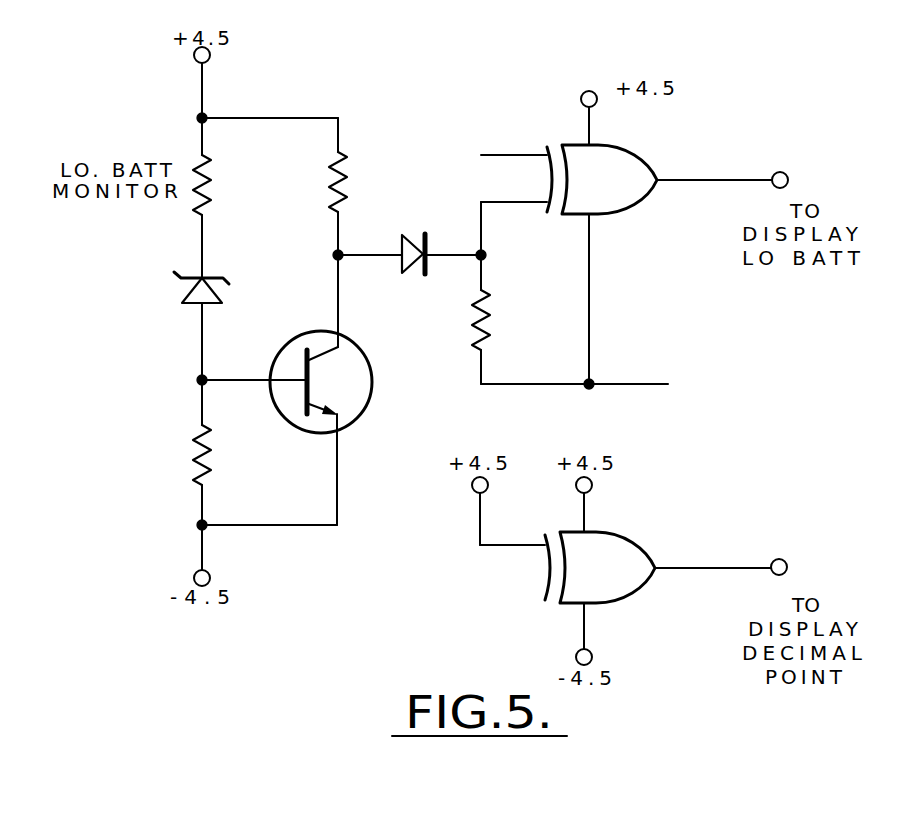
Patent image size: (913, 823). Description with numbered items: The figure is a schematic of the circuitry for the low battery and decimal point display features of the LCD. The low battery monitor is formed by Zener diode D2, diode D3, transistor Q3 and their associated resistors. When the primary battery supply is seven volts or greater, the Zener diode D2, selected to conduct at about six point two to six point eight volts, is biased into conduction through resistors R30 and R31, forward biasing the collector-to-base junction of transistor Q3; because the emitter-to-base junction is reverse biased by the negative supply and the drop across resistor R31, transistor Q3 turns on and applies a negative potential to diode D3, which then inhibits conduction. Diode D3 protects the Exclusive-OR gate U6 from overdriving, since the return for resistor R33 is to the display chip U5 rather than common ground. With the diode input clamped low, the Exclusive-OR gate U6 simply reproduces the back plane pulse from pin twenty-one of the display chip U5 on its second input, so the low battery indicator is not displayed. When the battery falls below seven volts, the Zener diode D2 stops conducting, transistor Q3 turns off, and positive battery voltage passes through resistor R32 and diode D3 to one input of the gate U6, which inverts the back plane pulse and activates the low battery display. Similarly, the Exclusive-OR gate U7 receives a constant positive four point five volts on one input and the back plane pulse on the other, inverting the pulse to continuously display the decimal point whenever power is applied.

The resistor R30 is at (232, 185).
The resistor R31 is at (166, 455).
The resistor R32 is at (367, 182).
The resistor R33 is at (508, 320).
The Zener diode D2 is at (223, 294).
The diode D3 is at (414, 275).
The transistor Q3 is at (373, 377).
The display chip U5 is at (481, 155).
The Exclusive-OR gate U6 is at (616, 190).
The Exclusive-OR gate U7 is at (610, 584).